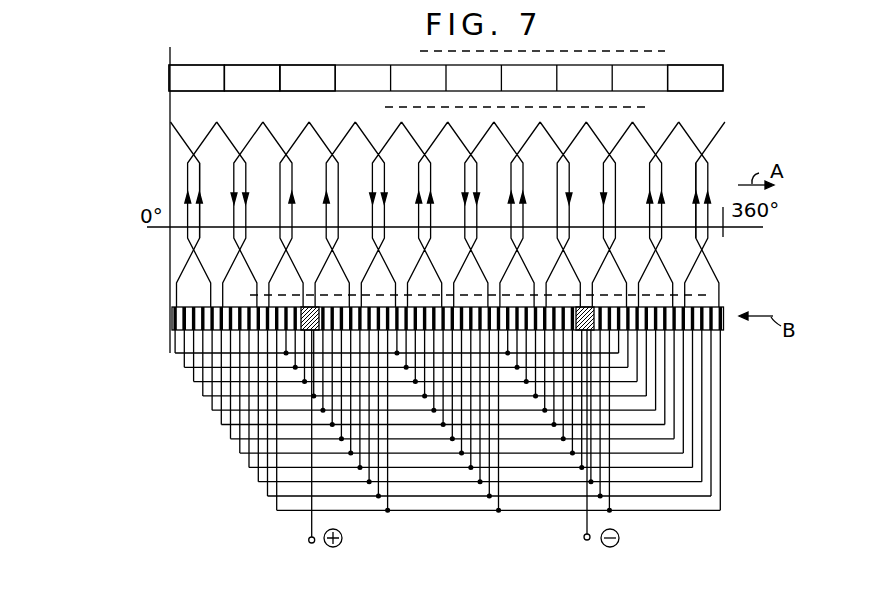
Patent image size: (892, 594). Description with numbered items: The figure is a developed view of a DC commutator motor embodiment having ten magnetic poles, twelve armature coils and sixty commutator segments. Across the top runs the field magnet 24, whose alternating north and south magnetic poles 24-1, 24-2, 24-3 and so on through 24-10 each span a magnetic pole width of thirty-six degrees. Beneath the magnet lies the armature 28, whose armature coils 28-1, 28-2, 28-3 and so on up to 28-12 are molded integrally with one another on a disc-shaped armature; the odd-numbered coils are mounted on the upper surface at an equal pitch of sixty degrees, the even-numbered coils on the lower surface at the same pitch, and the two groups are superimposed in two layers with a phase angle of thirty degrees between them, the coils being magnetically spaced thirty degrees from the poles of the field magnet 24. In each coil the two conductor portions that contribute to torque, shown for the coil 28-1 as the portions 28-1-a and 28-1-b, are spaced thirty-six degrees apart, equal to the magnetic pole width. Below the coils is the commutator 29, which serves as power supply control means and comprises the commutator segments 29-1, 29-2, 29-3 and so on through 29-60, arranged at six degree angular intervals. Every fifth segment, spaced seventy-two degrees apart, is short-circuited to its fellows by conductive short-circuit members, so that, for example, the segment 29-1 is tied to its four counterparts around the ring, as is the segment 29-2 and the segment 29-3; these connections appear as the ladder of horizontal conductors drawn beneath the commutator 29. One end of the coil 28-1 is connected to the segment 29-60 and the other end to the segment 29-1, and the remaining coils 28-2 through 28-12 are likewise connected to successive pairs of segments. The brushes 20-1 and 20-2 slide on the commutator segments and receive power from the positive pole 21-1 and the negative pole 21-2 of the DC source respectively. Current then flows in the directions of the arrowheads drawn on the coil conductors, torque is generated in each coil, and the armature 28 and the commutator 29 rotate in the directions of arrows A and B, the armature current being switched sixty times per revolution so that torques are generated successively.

The field magnet 24 is at (725, 78).
The magnetic pole 24-1 is at (181, 65).
The magnetic pole 24-2 is at (238, 65).
The magnetic pole 24-3 is at (323, 72).
The magnetic pole 24-10 is at (679, 72).
The armature 28 is at (800, 283).
The armature coil 28-1 is at (716, 135).
The armature coil 28-2 is at (208, 134).
The armature coil 28-3 is at (254, 135).
The armature coil 28-12 is at (685, 131).
The conductor portion 28-1-a is at (698, 172).
The conductor portion 28-1-b is at (198, 173).
The commutator 29 is at (725, 330).
The commutator segment 29-1 is at (172, 320).
The commutator segment 29-2 is at (176, 312).
The commutator segment 29-3 is at (192, 316).
The commutator segment 29-60 is at (722, 307).
The brush 20-1 is at (300, 307).
The brush 20-2 is at (577, 307).
The positive pole 21-1 is at (309, 543).
The negative pole 21-2 is at (584, 540).